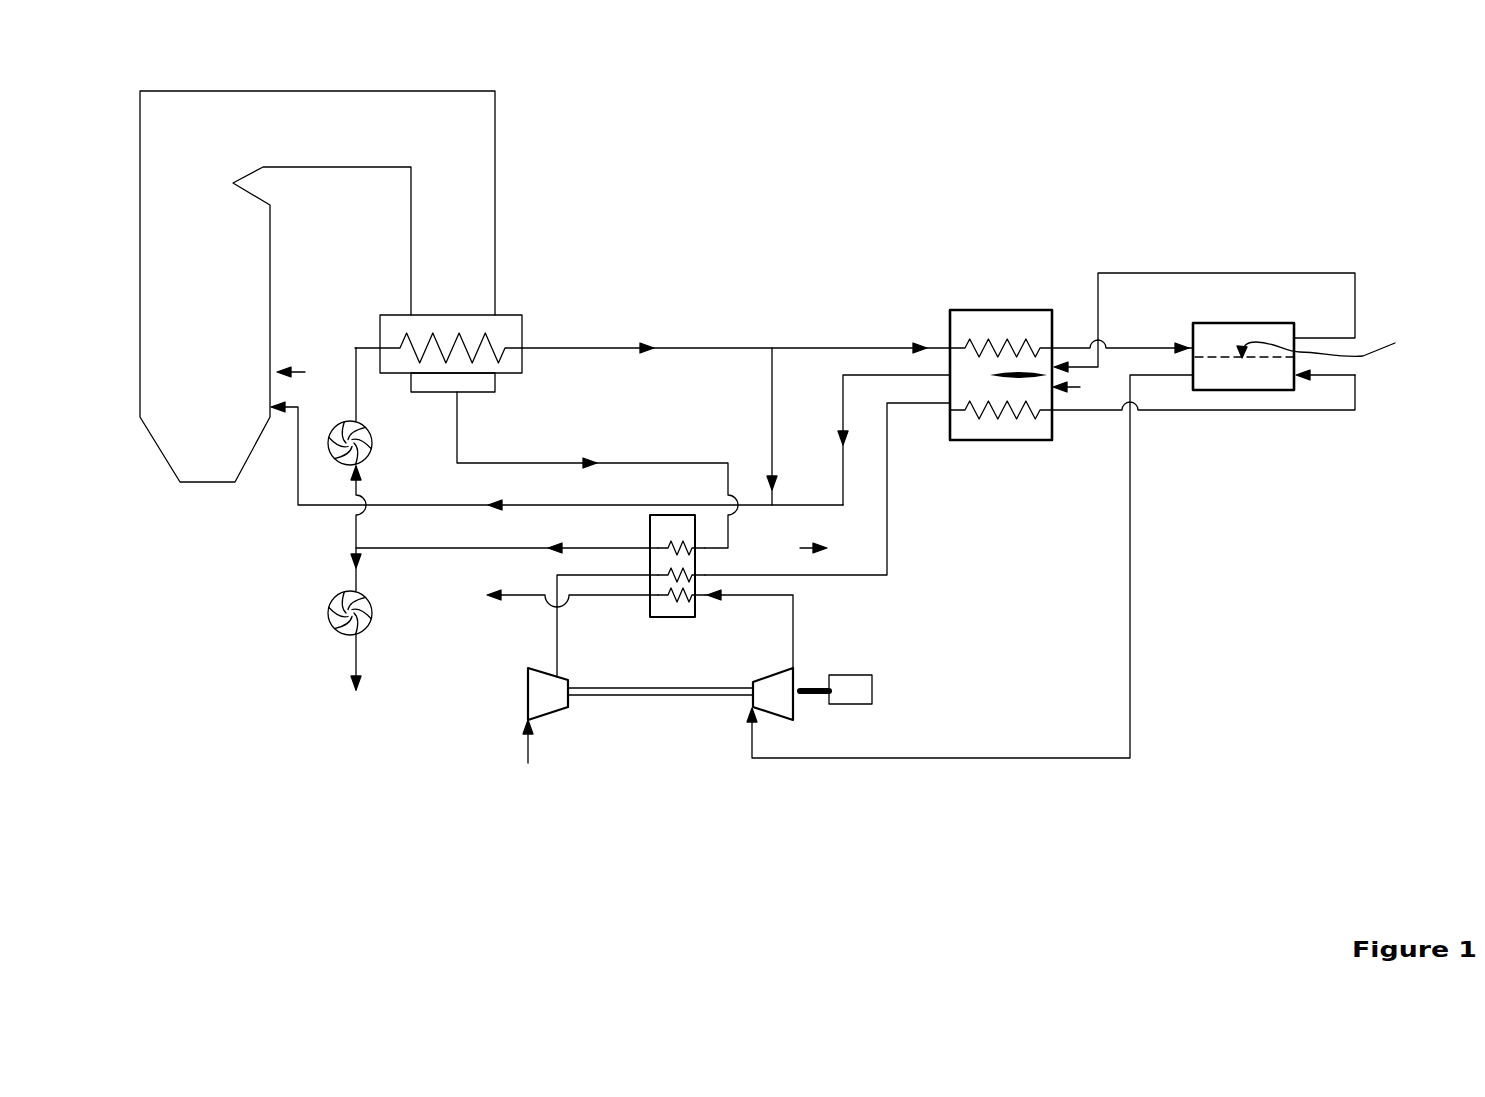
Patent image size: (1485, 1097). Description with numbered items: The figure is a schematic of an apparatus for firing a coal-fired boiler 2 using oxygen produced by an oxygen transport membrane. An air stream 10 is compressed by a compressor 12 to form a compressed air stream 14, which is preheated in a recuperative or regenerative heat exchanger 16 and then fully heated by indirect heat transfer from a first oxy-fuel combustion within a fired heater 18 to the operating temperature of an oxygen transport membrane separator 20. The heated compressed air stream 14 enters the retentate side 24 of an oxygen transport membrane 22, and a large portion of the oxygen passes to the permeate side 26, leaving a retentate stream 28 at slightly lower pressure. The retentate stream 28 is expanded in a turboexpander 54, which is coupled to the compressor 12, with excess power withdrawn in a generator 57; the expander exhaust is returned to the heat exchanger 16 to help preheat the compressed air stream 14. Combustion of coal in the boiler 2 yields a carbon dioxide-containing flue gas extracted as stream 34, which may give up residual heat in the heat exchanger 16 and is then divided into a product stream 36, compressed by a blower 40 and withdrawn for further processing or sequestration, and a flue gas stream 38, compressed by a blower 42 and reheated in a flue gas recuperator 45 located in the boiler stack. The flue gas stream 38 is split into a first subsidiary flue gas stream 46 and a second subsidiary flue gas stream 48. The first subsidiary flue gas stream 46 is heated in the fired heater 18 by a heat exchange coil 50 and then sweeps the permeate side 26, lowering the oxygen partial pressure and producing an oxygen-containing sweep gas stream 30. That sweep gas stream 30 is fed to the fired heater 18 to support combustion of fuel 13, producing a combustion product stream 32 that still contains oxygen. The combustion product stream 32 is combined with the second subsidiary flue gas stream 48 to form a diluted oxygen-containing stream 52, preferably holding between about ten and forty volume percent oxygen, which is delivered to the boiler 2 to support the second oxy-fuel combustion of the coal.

The boiler 2 is at (307, 338).
The air stream 10 is at (530, 752).
The compressor 12 is at (542, 705).
The fuel 13 is at (1082, 389).
The compressed air stream 14 is at (555, 650).
The recuperative or regenerative heat exchanger 16 is at (657, 618).
The fired heater 18 is at (1002, 433).
The oxygen transport membrane separator 20 is at (1245, 318).
The oxygen transport membrane 22 is at (1335, 347).
The retentate side 24 is at (1215, 375).
The permeate side 26 is at (1272, 330).
The retentate stream 28 is at (1130, 630).
The oxygen-containing sweep gas stream 30 is at (1228, 273).
The combustion product stream 32 is at (842, 473).
The flue gas stream (carbon dioxide-containing flue gas) 34 is at (557, 462).
The product stream 36 is at (352, 672).
The flue gas stream 38 is at (355, 373).
The blower 40 is at (330, 636).
The blower 42 is at (373, 447).
The flue gas recuperator 45 is at (520, 315).
The first subsidiary flue gas stream 46 is at (798, 347).
The second subsidiary flue gas stream 48 is at (768, 377).
The heat exchange coil 50 is at (1028, 342).
The diluted oxygen-containing stream 52 is at (327, 510).
The turboexpander 54 is at (770, 688).
The generator 57 is at (858, 690).